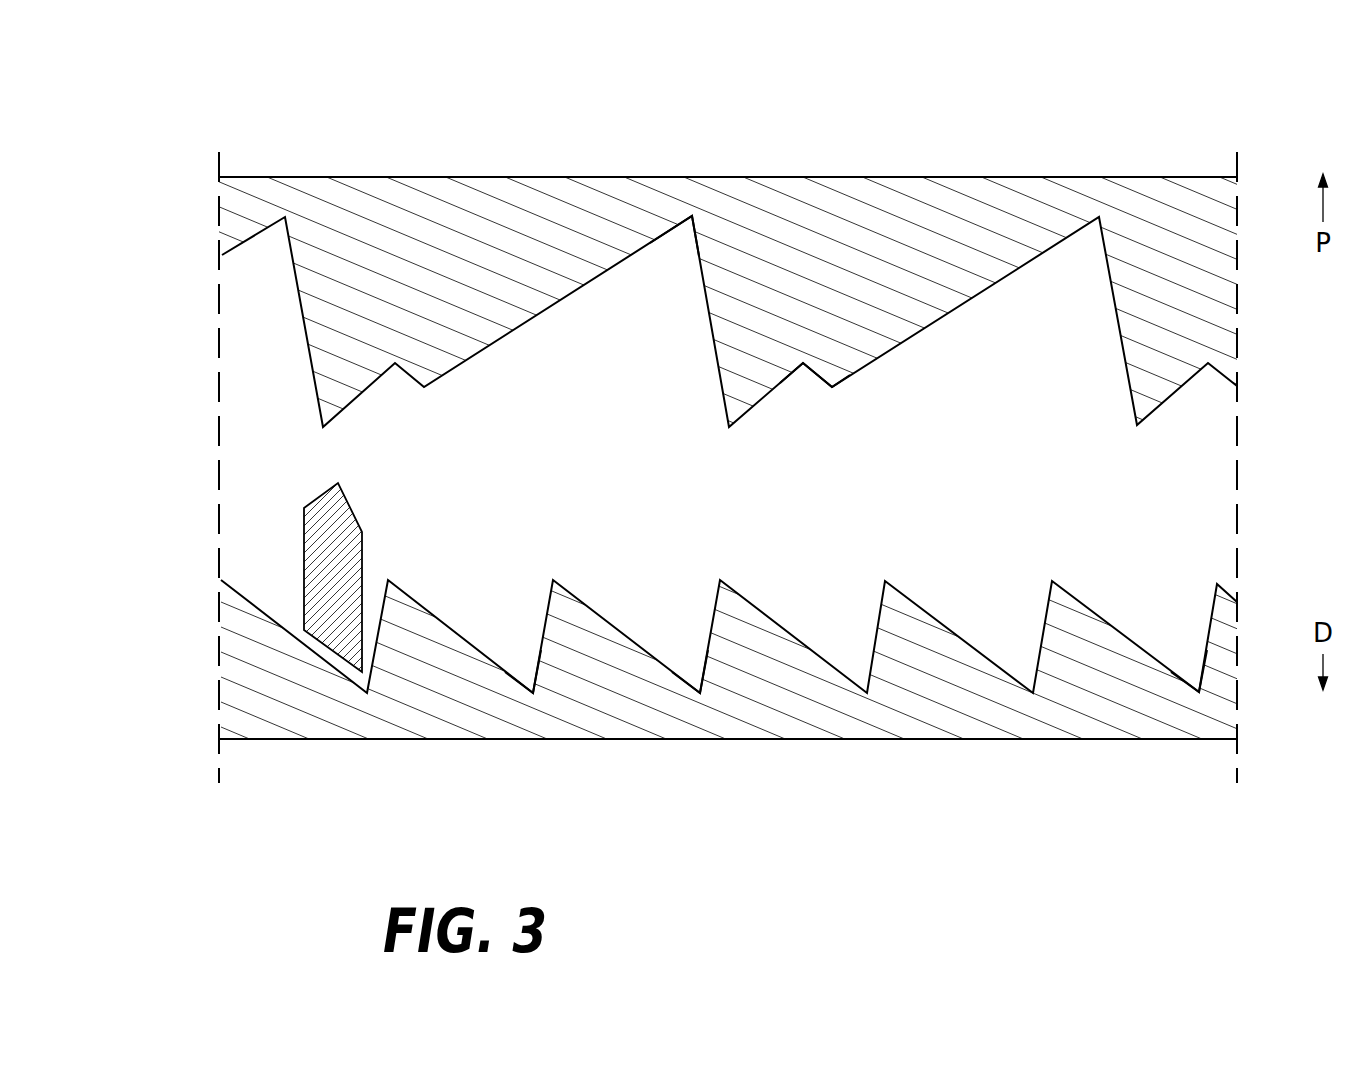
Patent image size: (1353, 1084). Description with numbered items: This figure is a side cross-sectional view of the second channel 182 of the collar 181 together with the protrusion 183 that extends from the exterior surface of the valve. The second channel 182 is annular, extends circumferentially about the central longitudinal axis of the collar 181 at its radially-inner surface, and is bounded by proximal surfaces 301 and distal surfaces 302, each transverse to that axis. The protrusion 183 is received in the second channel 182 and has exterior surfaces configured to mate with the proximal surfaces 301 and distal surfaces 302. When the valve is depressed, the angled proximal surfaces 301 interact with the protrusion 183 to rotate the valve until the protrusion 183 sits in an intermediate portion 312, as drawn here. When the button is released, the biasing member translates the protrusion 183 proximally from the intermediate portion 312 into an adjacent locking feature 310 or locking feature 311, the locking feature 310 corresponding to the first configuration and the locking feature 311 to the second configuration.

The collar 181 is at (908, 207).
The second channel 182 is at (259, 467).
The protrusion 183 is at (322, 537).
The proximal surfaces 301 is at (382, 370).
The distal surfaces 302 is at (793, 637).
The locking feature 310 is at (677, 231).
The locking feature 311 is at (803, 373).
The intermediate portion 312 is at (524, 674).